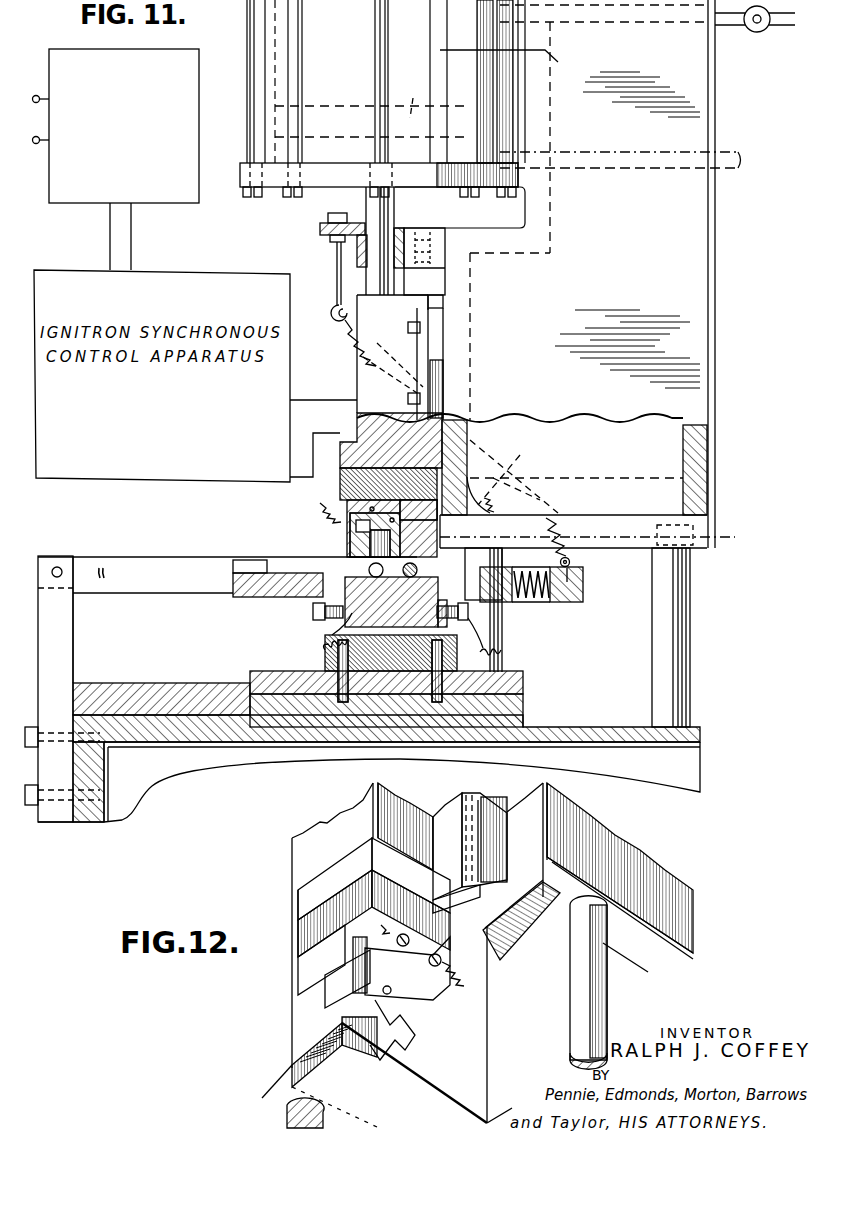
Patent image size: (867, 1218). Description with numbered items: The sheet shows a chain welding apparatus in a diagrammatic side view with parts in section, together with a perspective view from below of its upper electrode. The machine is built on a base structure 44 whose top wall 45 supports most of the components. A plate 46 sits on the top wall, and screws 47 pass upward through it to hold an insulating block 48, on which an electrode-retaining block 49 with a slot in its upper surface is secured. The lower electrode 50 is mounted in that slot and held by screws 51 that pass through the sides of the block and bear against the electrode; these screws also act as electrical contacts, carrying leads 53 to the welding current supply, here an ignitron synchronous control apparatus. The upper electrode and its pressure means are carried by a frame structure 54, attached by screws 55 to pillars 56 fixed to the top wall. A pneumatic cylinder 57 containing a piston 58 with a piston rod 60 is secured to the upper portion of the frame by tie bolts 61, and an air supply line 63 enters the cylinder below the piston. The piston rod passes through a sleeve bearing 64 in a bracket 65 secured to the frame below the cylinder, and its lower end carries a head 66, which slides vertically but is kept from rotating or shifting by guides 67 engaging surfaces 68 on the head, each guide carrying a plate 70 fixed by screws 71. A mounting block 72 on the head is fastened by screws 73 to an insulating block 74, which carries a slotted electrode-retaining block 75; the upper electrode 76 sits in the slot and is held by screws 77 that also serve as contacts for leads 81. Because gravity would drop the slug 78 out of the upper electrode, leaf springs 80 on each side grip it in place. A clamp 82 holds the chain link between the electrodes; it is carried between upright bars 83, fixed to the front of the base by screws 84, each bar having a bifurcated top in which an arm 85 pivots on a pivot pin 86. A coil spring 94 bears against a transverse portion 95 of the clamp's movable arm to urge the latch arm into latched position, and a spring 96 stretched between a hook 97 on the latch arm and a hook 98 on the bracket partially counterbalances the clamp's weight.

In FIG. 11, the base structure 44 is at (146, 786).
In FIG. 11, the top wall 45 is at (245, 750).
In FIG. 11, the plate 46 is at (523, 692).
In FIG. 11, the screws 47 is at (523, 680).
In FIG. 11, the insulating block 48 is at (325, 660).
In FIG. 11, the electrode-retaining block 49 is at (330, 623).
In FIG. 11, the lower electrode 50 is at (438, 592).
In FIG. 11, the screws 51 is at (313, 610).
In FIG. 11, the leads 53 is at (325, 647).
In FIG. 11, the frame structure 54 is at (550, 245).
In FIG. 12, the frame structure 54 is at (630, 862).
In FIG. 11, the screws 55 is at (597, 537).
In FIG. 11, the pillars 56 is at (688, 668).
In FIG. 12, the pillars 56 is at (607, 996).
In FIG. 11, the pneumatic cylinder 57 is at (514, 63).
In FIG. 11, the piston 58 is at (417, 96).
In FIG. 11, the piston rod 60 is at (394, 207).
In FIG. 11, the tie bolts 61 is at (293, 198).
In FIG. 11, the air supply line 63 is at (610, 158).
In FIG. 11, the sleeve bearing 64 is at (358, 247).
In FIG. 11, the bracket 65 is at (419, 261).
In FIG. 11, the head 66 is at (357, 378).
In FIG. 12, the head 66 is at (350, 808).
In FIG. 11, the guides 67 is at (443, 372).
In FIG. 12, the guides 67 is at (488, 888).
In FIG. 11, the surfaces 68 is at (445, 300).
In FIG. 12, the surfaces 68 is at (460, 797).
In FIG. 11, the plate 70 is at (428, 345).
In FIG. 12, the plate 70 is at (475, 828).
In FIG. 11, the screws 71 is at (409, 324).
In FIG. 12, the screws 71 is at (480, 848).
In FIG. 11, the mounting block 72 is at (357, 435).
In FIG. 12, the mounting block 72 is at (308, 903).
In FIG. 11, the screws 73 is at (350, 456).
In FIG. 11, the insulating block 74 is at (340, 488).
In FIG. 12, the insulating block 74 is at (310, 937).
In FIG. 11, the electrode-retaining block 75 is at (350, 530).
In FIG. 12, the electrode-retaining block 75 is at (315, 975).
In FIG. 11, the upper electrode 76 is at (356, 544).
In FIG. 12, the upper electrode 76 is at (335, 992).
In FIG. 11, the screws 77 is at (490, 480).
In FIG. 12, the screws 77 is at (410, 942).
In FIG. 12, the slug 78 is at (362, 1030).
In FIG. 11, the leaf springs 80 is at (370, 552).
In FIG. 12, the leaf springs 80 is at (393, 999).
In FIG. 11, the leads 81 is at (320, 505).
In FIG. 12, the leads 81 is at (470, 975).
In FIG. 11, the clamp 82 is at (186, 602).
In FIG. 11, the upright bars 83 is at (73, 648).
In FIG. 11, the screws 84 is at (40, 805).
In FIG. 11, the arm 85 is at (170, 556).
In FIG. 11, the pivot pin 86 is at (58, 567).
In FIG. 11, the coil spring 94 is at (568, 537).
In FIG. 11, the transverse portion 95 is at (583, 586).
In FIG. 11, the spring 96 is at (538, 512).
In FIG. 11, the hook 97 is at (571, 564).
In FIG. 11, the hook 98 is at (361, 317).